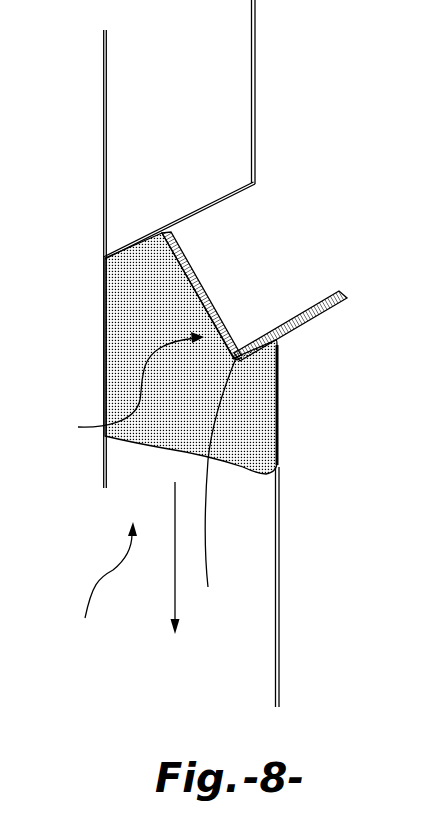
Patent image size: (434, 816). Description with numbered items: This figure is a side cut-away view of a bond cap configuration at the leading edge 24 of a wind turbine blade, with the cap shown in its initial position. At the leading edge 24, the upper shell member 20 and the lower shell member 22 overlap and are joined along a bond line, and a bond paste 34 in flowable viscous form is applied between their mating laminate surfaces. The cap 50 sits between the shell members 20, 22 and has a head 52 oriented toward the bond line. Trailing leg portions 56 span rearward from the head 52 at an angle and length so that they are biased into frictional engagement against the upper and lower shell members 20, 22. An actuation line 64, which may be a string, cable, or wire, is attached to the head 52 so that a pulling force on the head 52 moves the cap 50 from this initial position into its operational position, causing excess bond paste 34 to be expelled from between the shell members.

The upper shell member 20 is at (103, 122).
The lower shell member 22 is at (278, 560).
The leading edge 24 is at (99, 592).
The bond paste 34 is at (125, 340).
The cap 50 is at (127, 384).
The head 52 is at (238, 338).
The trailing leg portions 56 is at (199, 271).
The actuation lines 64 is at (206, 500).